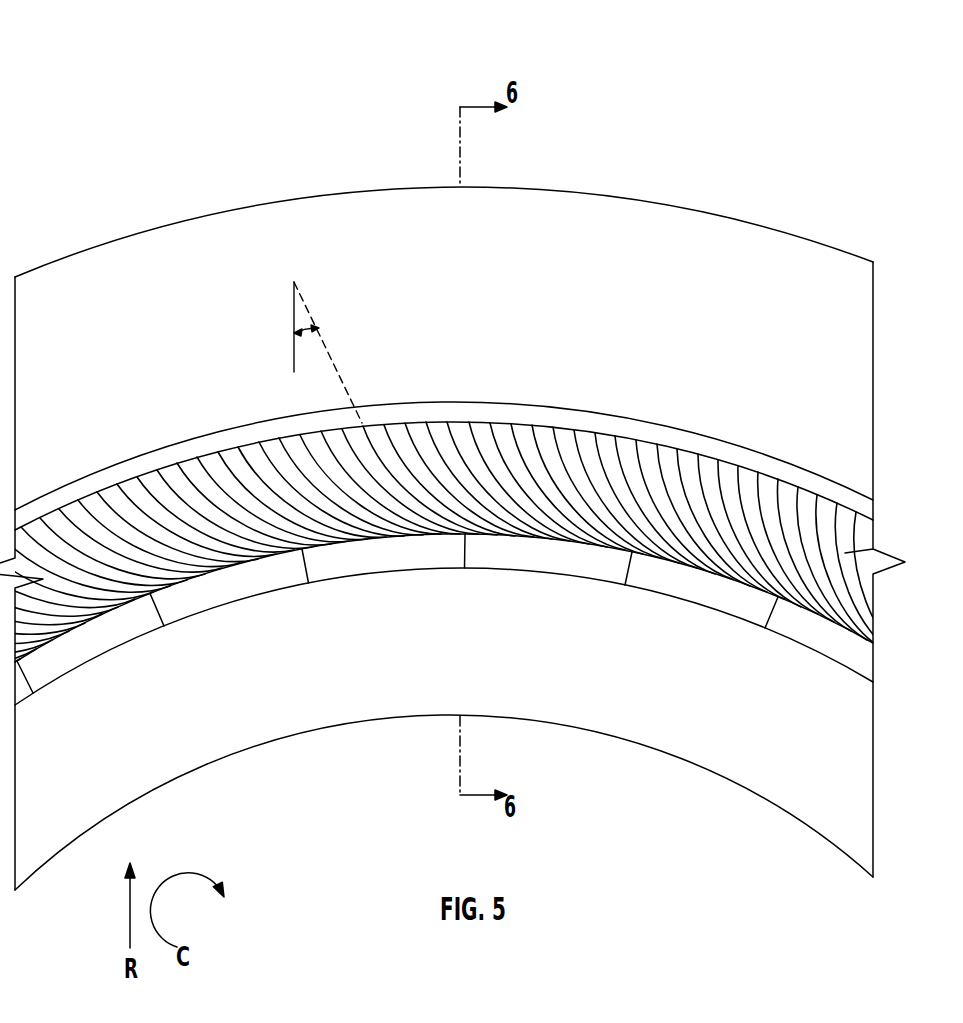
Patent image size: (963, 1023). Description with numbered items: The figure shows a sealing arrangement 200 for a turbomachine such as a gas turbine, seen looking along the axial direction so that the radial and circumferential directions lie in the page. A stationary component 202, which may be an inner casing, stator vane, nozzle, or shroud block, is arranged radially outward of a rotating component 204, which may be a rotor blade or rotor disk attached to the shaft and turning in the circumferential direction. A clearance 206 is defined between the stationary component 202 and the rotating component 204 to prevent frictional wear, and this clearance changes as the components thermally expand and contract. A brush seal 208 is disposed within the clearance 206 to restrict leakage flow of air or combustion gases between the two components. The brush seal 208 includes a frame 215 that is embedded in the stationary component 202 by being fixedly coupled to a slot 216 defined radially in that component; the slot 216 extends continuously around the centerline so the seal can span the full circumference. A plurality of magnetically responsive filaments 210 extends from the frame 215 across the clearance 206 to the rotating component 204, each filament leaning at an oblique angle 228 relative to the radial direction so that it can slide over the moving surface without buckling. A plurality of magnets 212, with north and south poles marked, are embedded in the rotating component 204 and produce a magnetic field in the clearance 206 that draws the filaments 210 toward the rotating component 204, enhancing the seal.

The sealing arrangement 200 is at (75, 128).
The stationary component 202 is at (768, 270).
The rotating component 204 is at (768, 752).
The clearance 206 is at (457, 570).
The brush seal 208 is at (444, 432).
The magnetically responsive filaments 210 is at (541, 452).
The magnets 212 is at (327, 560).
The frame 215 is at (677, 433).
The slot 216 is at (600, 404).
The oblique angle 228 is at (308, 337).